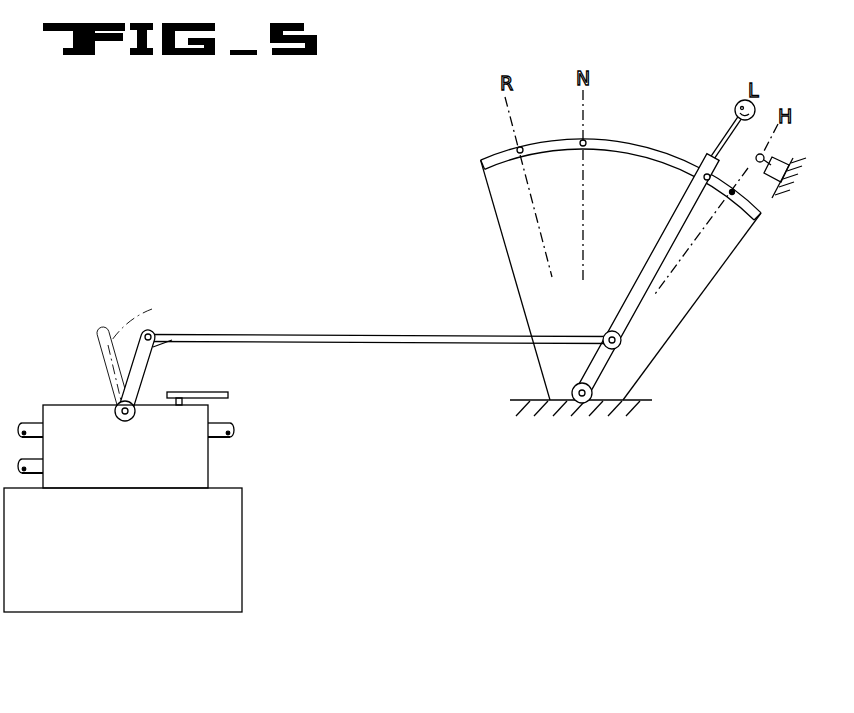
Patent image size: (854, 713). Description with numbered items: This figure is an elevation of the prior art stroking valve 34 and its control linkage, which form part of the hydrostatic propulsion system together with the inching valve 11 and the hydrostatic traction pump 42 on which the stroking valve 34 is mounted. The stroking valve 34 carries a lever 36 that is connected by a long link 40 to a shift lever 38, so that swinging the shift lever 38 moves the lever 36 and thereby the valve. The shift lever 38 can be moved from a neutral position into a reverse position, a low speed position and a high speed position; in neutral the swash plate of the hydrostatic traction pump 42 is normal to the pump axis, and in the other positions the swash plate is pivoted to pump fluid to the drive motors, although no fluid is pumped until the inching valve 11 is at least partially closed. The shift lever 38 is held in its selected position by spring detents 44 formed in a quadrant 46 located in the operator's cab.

The inching valve 11 is at (197, 390).
The stroking valve 34 is at (204, 458).
The lever 36 is at (177, 336).
The shift lever 38 is at (684, 203).
The link 40 is at (433, 334).
The hydrostatic traction pump 42 is at (232, 551).
The spring detents 44 is at (580, 141).
The quadrant 46 is at (481, 165).